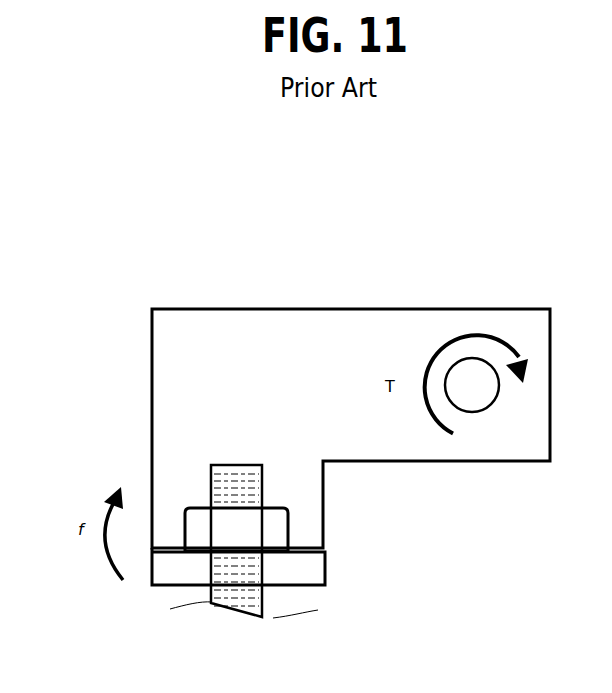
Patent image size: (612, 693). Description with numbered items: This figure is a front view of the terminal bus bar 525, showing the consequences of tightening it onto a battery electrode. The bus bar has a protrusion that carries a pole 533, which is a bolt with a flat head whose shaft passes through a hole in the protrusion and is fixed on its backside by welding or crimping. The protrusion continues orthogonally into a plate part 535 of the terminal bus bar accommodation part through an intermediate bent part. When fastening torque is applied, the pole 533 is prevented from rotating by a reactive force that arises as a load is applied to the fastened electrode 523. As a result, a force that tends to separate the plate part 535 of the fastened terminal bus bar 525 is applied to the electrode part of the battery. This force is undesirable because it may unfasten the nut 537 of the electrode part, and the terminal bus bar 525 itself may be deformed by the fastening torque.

The terminal bus bar 525 is at (282, 309).
The fastened electrode 523 is at (237, 465).
The nut 537 is at (192, 508).
The plate part 535 is at (153, 579).
The pole 533 is at (487, 411).